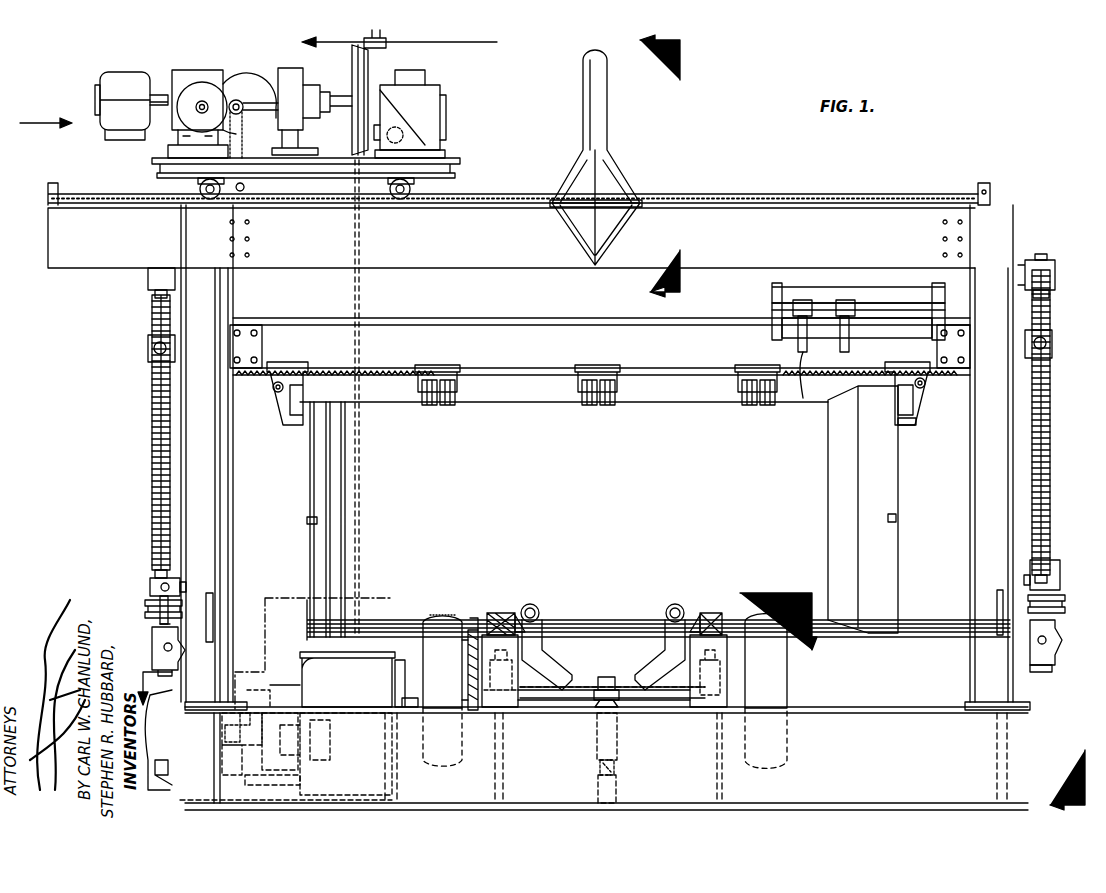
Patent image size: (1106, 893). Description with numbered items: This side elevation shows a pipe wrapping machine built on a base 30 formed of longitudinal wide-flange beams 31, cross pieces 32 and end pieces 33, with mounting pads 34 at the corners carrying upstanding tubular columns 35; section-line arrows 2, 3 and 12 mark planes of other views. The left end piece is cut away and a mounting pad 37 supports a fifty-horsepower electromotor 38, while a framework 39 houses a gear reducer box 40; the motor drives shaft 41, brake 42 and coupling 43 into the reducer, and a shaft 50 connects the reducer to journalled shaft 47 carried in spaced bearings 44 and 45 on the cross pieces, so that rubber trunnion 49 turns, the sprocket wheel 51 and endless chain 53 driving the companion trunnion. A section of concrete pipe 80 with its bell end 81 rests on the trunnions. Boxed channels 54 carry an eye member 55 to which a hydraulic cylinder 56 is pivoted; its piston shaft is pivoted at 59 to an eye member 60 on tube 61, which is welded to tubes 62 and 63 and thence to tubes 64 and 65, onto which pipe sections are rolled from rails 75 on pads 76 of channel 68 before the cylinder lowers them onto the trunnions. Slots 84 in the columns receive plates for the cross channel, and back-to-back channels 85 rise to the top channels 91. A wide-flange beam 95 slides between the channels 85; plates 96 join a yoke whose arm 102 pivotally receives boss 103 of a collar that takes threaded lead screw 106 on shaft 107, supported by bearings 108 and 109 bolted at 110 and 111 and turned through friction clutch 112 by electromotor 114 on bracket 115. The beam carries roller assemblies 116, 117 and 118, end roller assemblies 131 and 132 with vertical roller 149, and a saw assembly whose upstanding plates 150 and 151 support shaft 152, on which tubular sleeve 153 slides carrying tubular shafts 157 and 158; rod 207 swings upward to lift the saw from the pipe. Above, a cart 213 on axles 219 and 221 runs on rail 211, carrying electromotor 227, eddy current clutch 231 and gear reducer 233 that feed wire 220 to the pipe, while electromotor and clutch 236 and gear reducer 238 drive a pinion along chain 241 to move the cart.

The section line 2- 2 is at (693, 420).
The section line 3- 3 is at (477, 651).
The section line 12- 12 is at (675, 167).
The base 30 is at (861, 707).
The longitudinal wide-flange beams 31 is at (932, 720).
The cross pieces 32 is at (505, 778).
The end pieces 33 is at (1008, 753).
The mounting pads 34 is at (1020, 699).
The tubular columns 35 is at (212, 500).
The mounting pad 37 is at (160, 780).
The electromotor 38 is at (215, 697).
The framework 39 is at (398, 778).
The gear reducer box 40 is at (347, 679).
The shaft 41 is at (222, 735).
The brake 42 is at (240, 752).
The coupling 43 is at (290, 752).
The spaced bearings 44 is at (500, 671).
The spaced bearings 45 is at (712, 680).
The shaft 47 is at (548, 696).
The rubber trunnion 49 is at (440, 616).
The shaft 50 is at (402, 708).
The sprocket wheel 51 is at (472, 628).
The endless chain 53 is at (470, 665).
The boxed channels 54 is at (618, 782).
The eye member 55 is at (616, 766).
The hydraulic cylinder 56 is at (618, 730).
The pivot connection 59 is at (618, 688).
The eye member 60 is at (606, 676).
The tube 61 is at (577, 680).
The tube 62 is at (552, 660).
The tube 63 is at (660, 660).
The tube 64 is at (538, 606).
The tube 65 is at (676, 604).
The channel 68 is at (518, 705).
The rails 75 is at (500, 610).
The pads 76 is at (518, 612).
The concrete pipe 80 is at (596, 437).
The bell end 81 is at (880, 543).
The slots 84 is at (213, 614).
The channel 85 is at (233, 600).
The channels 91 is at (862, 206).
The wide-flange beam 95 is at (540, 330).
The plate 96 is at (244, 330).
The yoke arm 102 is at (148, 342).
The boss 103 is at (154, 350).
The threaded lead screw 106 is at (152, 435).
The shaft 107 is at (158, 570).
The bearing 108 is at (148, 278).
The bearing 109 is at (160, 582).
The bolting 110 is at (158, 292).
The bolting 111 is at (186, 587).
The friction clutch 112 is at (1065, 606).
The electromotor 114 is at (180, 654).
The bracket 115 is at (1050, 670).
The roller assembly 116 is at (448, 414).
The roller assembly 117 is at (609, 414).
The roller assembly 118 is at (770, 414).
The end roller assembly 131 is at (921, 422).
The end roller assembly 132 is at (275, 430).
The vertically extending roller 149 is at (915, 398).
The upstanding plate 150 is at (932, 300).
The upstanding plate 151 is at (782, 298).
The shaft 152 is at (876, 300).
The tubular sleeve 153 is at (830, 300).
The tubular shaft 157 is at (845, 348).
The tubular shaft 158 is at (803, 398).
The rod 207 is at (912, 326).
The rail 211 is at (755, 203).
The cart 213 is at (464, 153).
The axle 219 is at (413, 186).
The wire 220 is at (362, 296).
The axle 221 is at (198, 190).
The electromotor 227 is at (118, 78).
The eddy current clutch 231 is at (288, 78).
The gear reducer 233 is at (428, 100).
The electromotor and clutch 236 is at (196, 93).
The gear reducer 238 is at (240, 80).
The chain 241 is at (538, 198).